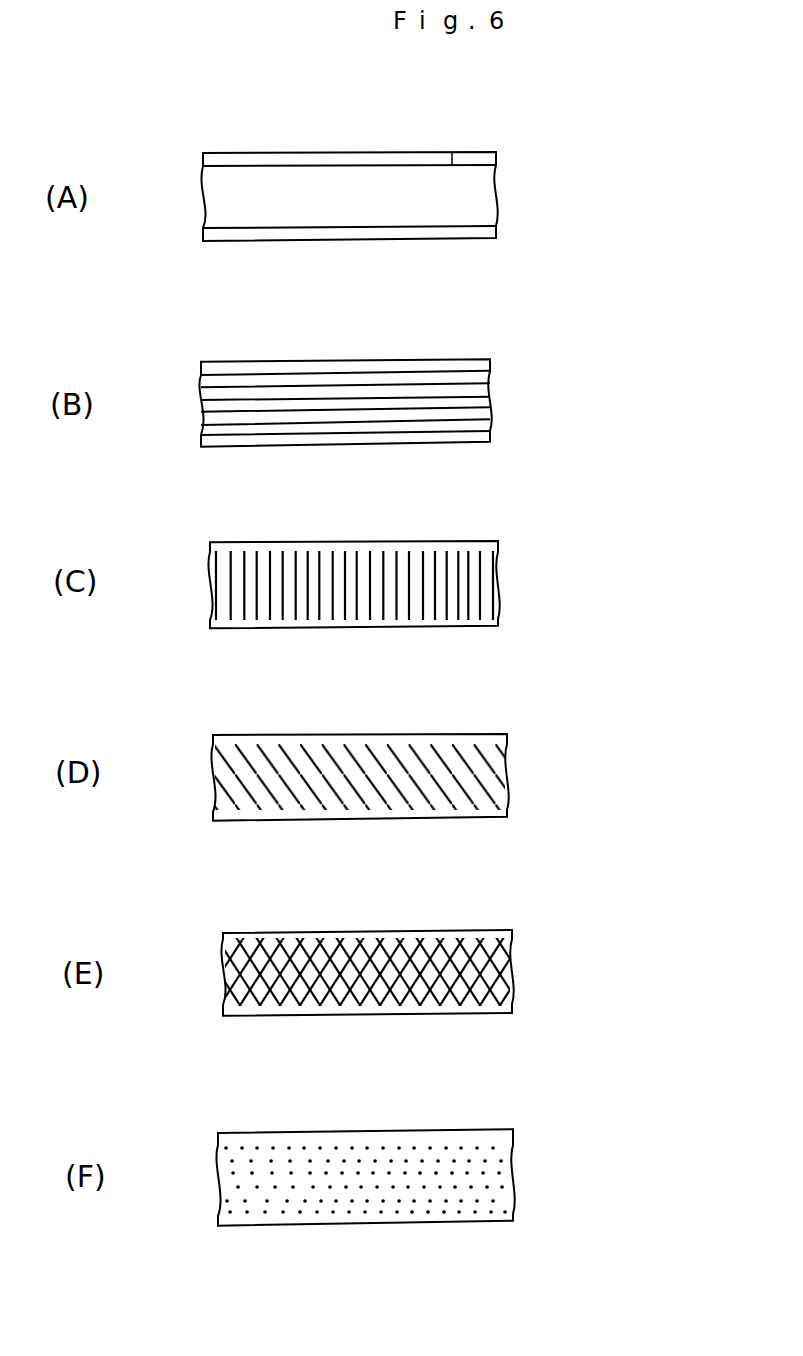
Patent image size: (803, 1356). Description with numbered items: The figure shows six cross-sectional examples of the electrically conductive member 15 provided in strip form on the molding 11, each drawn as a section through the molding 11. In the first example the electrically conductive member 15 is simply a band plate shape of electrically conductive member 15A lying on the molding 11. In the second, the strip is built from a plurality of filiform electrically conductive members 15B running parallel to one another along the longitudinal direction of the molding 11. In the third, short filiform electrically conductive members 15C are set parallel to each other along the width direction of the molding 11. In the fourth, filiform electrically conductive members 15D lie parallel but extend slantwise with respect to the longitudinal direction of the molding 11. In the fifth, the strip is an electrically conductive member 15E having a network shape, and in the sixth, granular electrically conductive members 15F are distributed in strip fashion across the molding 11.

The molding 11 is at (378, 152).
The electrically conductive member 15 is at (508, 163).
The band plate shape electrically conductive member 15A is at (452, 153).
The filiform electrically conductive member 15B is at (447, 385).
The short filiform electrically conductive member 15C is at (438, 558).
The slanted filiform electrically conductive member 15D is at (482, 762).
The network shape electrically conductive member 15E is at (437, 947).
The granular electrically conductive member 15F is at (447, 1170).